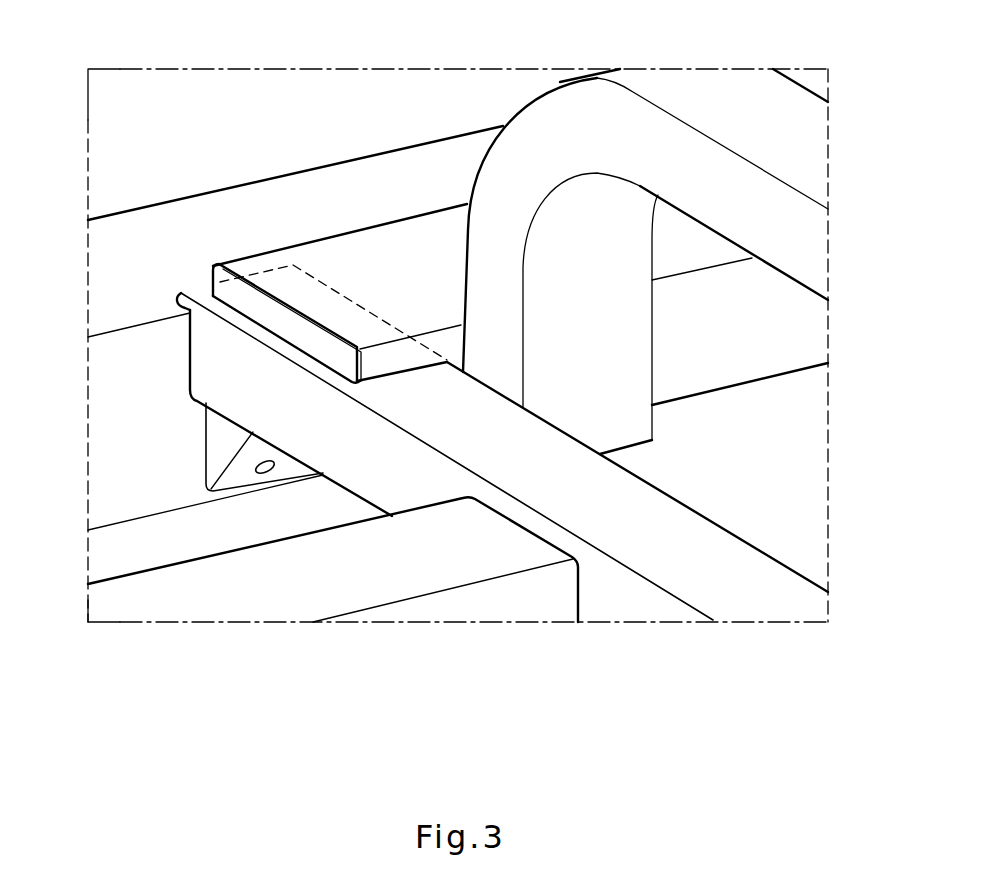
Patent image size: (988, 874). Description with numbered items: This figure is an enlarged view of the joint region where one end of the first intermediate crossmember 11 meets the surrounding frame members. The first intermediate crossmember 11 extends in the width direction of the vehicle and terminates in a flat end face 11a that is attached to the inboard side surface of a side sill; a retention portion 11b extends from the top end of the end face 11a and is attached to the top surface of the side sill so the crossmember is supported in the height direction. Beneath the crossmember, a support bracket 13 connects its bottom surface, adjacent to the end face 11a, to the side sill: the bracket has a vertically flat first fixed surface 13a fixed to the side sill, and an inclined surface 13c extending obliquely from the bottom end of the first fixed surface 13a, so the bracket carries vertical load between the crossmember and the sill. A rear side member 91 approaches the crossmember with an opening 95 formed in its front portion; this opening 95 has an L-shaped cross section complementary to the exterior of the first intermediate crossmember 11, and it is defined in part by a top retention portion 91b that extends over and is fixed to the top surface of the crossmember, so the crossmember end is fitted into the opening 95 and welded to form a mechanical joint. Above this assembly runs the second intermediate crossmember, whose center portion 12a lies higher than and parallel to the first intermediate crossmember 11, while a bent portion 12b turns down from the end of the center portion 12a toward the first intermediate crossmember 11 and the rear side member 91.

The first intermediate crossmember 11 is at (653, 547).
The end face 11a is at (192, 367).
The retention portion 11b is at (197, 293).
The center portion 12a is at (810, 245).
The bent portion 12b is at (623, 386).
The support bracket 13 is at (200, 472).
The first fixed surface 13a is at (205, 445).
The inclined surface 13c is at (240, 474).
The rear side member 91 is at (419, 264).
The top retention portion 91b is at (258, 262).
The opening 95 is at (412, 385).